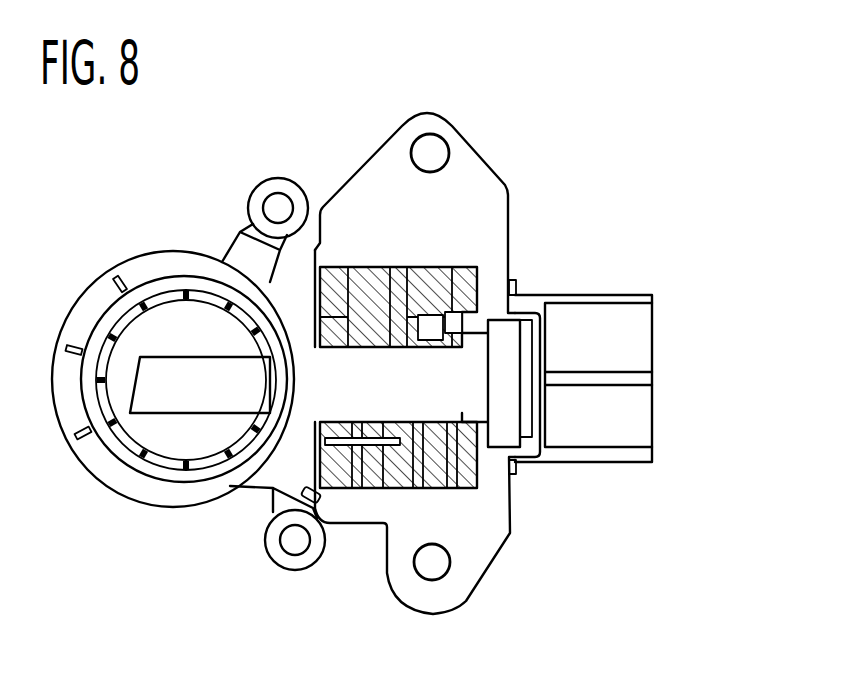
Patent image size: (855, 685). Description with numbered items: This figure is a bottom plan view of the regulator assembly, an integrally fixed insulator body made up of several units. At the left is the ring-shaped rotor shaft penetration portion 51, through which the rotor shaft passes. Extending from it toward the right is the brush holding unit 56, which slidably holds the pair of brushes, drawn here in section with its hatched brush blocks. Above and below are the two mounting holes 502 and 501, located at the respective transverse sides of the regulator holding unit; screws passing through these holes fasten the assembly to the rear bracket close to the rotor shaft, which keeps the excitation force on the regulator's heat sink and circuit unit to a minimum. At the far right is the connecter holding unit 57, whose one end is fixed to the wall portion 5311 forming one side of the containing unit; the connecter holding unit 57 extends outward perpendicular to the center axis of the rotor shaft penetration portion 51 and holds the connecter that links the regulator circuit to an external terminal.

The rotor shaft penetration portion 51 is at (156, 262).
The mounting hole 502 is at (447, 148).
The connecter holding unit 57 is at (605, 302).
The wall portion 5311 is at (512, 490).
The brush holding unit 56 is at (433, 393).
The mounting hole 501 is at (433, 578).